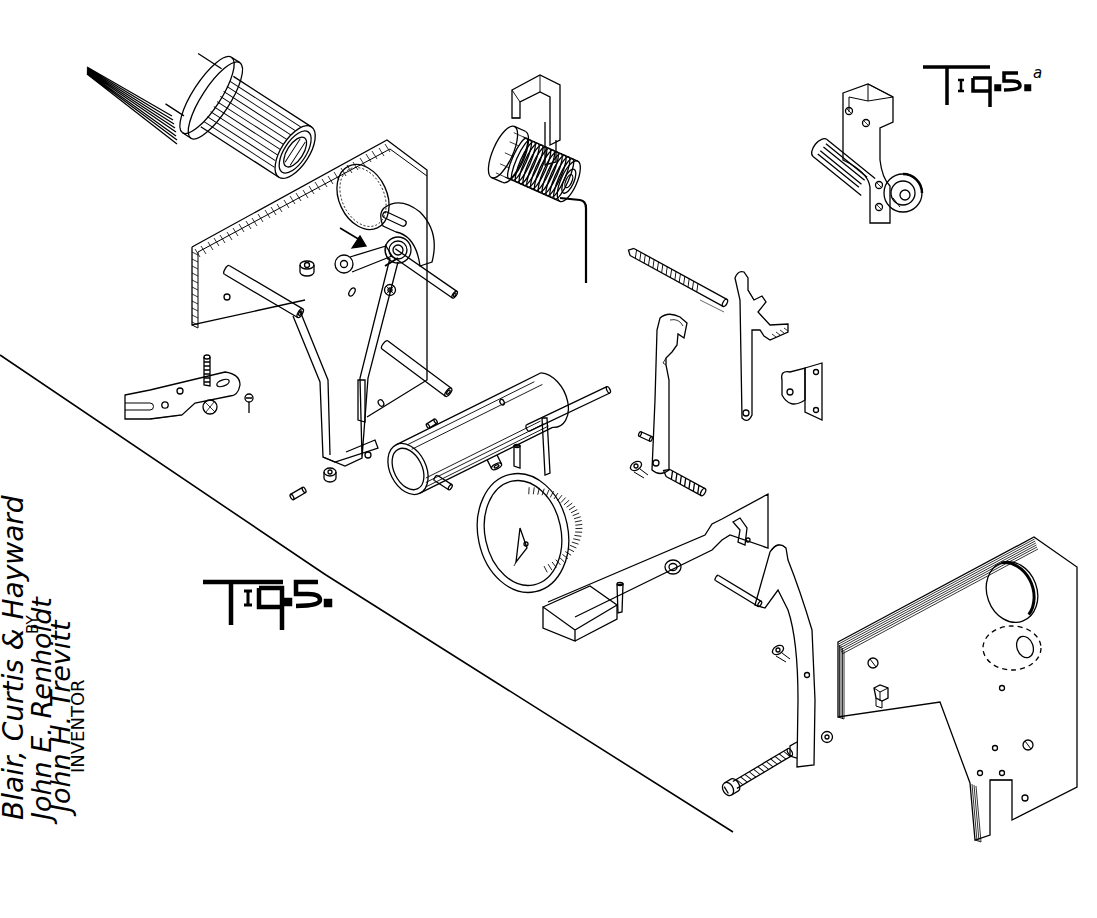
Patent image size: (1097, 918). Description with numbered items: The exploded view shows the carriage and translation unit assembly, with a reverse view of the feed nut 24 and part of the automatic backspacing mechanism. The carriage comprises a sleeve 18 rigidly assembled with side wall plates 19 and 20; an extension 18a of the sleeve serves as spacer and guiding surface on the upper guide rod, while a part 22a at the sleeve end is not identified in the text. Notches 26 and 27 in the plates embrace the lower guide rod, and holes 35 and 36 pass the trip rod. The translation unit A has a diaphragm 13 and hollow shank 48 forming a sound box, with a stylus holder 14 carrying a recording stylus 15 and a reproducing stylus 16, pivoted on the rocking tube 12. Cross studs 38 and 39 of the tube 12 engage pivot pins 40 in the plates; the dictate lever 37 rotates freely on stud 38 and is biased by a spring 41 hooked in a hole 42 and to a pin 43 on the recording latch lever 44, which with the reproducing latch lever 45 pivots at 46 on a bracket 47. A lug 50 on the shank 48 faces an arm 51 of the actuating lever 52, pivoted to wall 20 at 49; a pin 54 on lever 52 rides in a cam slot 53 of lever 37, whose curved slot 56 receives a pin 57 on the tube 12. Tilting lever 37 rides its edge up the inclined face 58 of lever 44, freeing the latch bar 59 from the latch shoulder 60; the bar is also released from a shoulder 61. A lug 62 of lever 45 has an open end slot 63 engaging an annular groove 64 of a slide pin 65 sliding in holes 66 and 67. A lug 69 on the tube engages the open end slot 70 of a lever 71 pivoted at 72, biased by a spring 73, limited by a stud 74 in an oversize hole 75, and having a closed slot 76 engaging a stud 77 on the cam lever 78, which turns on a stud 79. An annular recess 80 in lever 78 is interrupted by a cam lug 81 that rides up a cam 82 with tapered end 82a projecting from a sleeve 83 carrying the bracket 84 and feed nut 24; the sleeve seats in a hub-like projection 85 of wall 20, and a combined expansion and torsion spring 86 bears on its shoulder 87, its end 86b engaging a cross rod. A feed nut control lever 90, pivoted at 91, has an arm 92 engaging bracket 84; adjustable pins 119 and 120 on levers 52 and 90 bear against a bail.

In FIG. 5, the rocking tube 12 is at (481, 441).
In FIG. 5, the diaphragm 13 is at (522, 539).
In FIG. 5, the stylus holder 14 is at (527, 544).
In FIG. 5, the recording stylus 15 is at (513, 535).
In FIG. 5, the reproducing stylus 16 is at (515, 549).
In FIG. 5, the sleeve 18 is at (218, 125).
In FIG. 5, the extension 18a is at (114, 90).
In FIG. 5, the side wall plate 19 is at (227, 300).
In FIG. 5, the side wall plate 20 is at (965, 680).
In FIG. 5, the sheath end ferrule 22a is at (322, 147).
In FIG. 5, the feed nut 24 is at (520, 82).
In FIG. 5a, the feed nut 24 is at (852, 94).
In FIG. 5, the notch 26 is at (366, 415).
In FIG. 5, the notch 27 is at (1010, 822).
In FIG. 5, the hole 35 is at (383, 401).
In FIG. 5, the hole 36 is at (1028, 796).
In FIG. 5, the dictate control lever 37 is at (655, 559).
In FIG. 5, the cross stud 38 is at (484, 474).
In FIG. 5, the cross stud 39 is at (432, 421).
In FIG. 5, the pivot pin 40 is at (880, 706).
In FIG. 5, the spring 41 is at (702, 485).
In FIG. 5, the hole 42 is at (748, 544).
In FIG. 5, the pin 43 is at (640, 434).
In FIG. 5, the recording latch lever 44 is at (667, 389).
In FIG. 5, the reproducing latch lever 45 is at (781, 330).
In FIG. 5, the pivot 46 is at (637, 473).
In FIG. 5, the bracket 47 is at (802, 373).
In FIG. 5, the hollow shank 48 is at (551, 471).
In FIG. 5, the pivot 49 is at (775, 655).
In FIG. 5, the lug 50 is at (525, 456).
In FIG. 5, the arm 51 is at (725, 586).
In FIG. 5, the actuating lever 52 is at (801, 639).
In FIG. 5, the cam slot 53 is at (740, 522).
In FIG. 5, the pin 54 is at (781, 550).
In FIG. 5, the curved slot 56 is at (620, 584).
In FIG. 5, the pin 57 is at (440, 488).
In FIG. 5, the inclined face 58 is at (682, 338).
In FIG. 5, the latch bar 59 is at (604, 392).
In FIG. 5, the latch shoulder 60 is at (666, 362).
In FIG. 5, the shoulder 61 is at (757, 302).
In FIG. 5, the lug 62 is at (773, 330).
In FIG. 5, the open end slot 63 is at (790, 338).
In FIG. 5, the annular groove 64 is at (704, 297).
In FIG. 5, the slide pin 65 is at (703, 308).
In FIG. 5, the hole 66 is at (349, 297).
In FIG. 5, the hole 67 is at (1005, 691).
In FIG. 5, the lug 69 is at (503, 400).
In FIG. 5, the open end slot 70 is at (179, 397).
In FIG. 5, the lever 71 is at (160, 418).
In FIG. 5, the pivot 72 is at (311, 277).
In FIG. 5, the spring 73 is at (204, 361).
In FIG. 5, the stud 74 is at (291, 298).
In FIG. 5, the hole 75 is at (164, 402).
In FIG. 5, the closed slot 76 is at (226, 382).
In FIG. 5, the stud 77 is at (250, 412).
In FIG. 5, the cam lever 78 is at (340, 258).
In FIG. 5, the stud 79 is at (452, 288).
In FIG. 5, the annular recess 80 is at (410, 246).
In FIG. 5, the cam lug 81 is at (385, 268).
In FIG. 5a, the cam 82 is at (927, 212).
In FIG. 5a, the tapered end portion 82a is at (915, 200).
In FIG. 5, the sleeve 83 is at (540, 180).
In FIG. 5a, the sleeve 83 is at (842, 181).
In FIG. 5, the bracket 84 is at (552, 128).
In FIG. 5a, the bracket 84 is at (877, 137).
In FIG. 5, the hub-like projection 85 is at (988, 652).
In FIG. 5, the combined expansion and torsion spring 86 is at (543, 176).
In FIG. 5, the spring end 86b is at (585, 272).
In FIG. 5, the shoulder 87 is at (503, 175).
In FIG. 5, the feed nut control lever 90 is at (422, 217).
In FIG. 5, the pivot 91 is at (393, 295).
In FIG. 5, the arm 92 is at (405, 219).
In FIG. 5, the adjustable pin 119 is at (752, 782).
In FIG. 5, the adjustable pin 120 is at (300, 498).